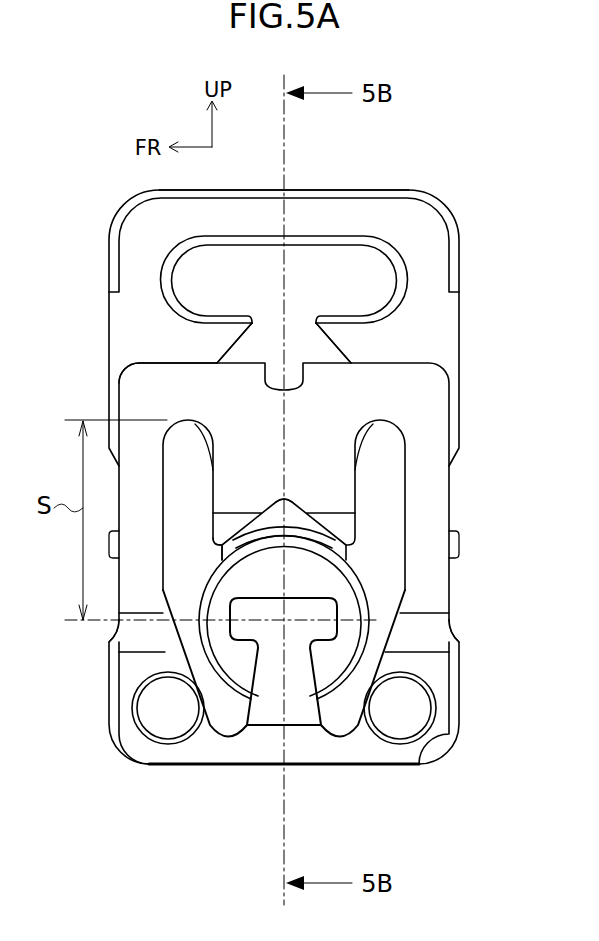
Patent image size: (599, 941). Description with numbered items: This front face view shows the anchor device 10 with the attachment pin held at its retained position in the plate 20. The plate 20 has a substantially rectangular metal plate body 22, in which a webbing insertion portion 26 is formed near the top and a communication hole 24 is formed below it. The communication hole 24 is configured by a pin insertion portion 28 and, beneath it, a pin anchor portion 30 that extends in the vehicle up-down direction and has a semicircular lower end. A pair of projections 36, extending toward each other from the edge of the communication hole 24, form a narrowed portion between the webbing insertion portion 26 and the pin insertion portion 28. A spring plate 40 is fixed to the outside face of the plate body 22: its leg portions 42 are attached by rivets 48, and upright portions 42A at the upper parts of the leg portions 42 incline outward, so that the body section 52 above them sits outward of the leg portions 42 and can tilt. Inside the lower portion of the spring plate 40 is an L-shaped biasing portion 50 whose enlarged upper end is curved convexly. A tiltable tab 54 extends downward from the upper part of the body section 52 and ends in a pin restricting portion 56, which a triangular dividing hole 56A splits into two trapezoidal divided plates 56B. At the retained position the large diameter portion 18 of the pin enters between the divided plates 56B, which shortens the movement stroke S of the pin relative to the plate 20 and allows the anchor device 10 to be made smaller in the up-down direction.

The anchor device 10 is at (278, 447).
The large diameter portion 18 is at (210, 662).
The plate 20 is at (428, 188).
The plate body 22 is at (243, 190).
The communication hole 24 is at (255, 357).
The webbing insertion portion 26 is at (305, 250).
The pin insertion portion 28 is at (327, 345).
The pin anchor portion 30 is at (214, 548).
The projections 36 is at (246, 333).
The spring plate 40 is at (428, 361).
The leg portions 42 is at (162, 756).
The upright portions 42A is at (135, 640).
The rivets 48 is at (158, 722).
The biasing portion 50 is at (227, 714).
The body section 52 is at (145, 362).
The tiltable tab 54 is at (373, 450).
The pin restricting portion 56 is at (357, 521).
The dividing hole 56A is at (299, 505).
The divided plates 56B is at (300, 538).